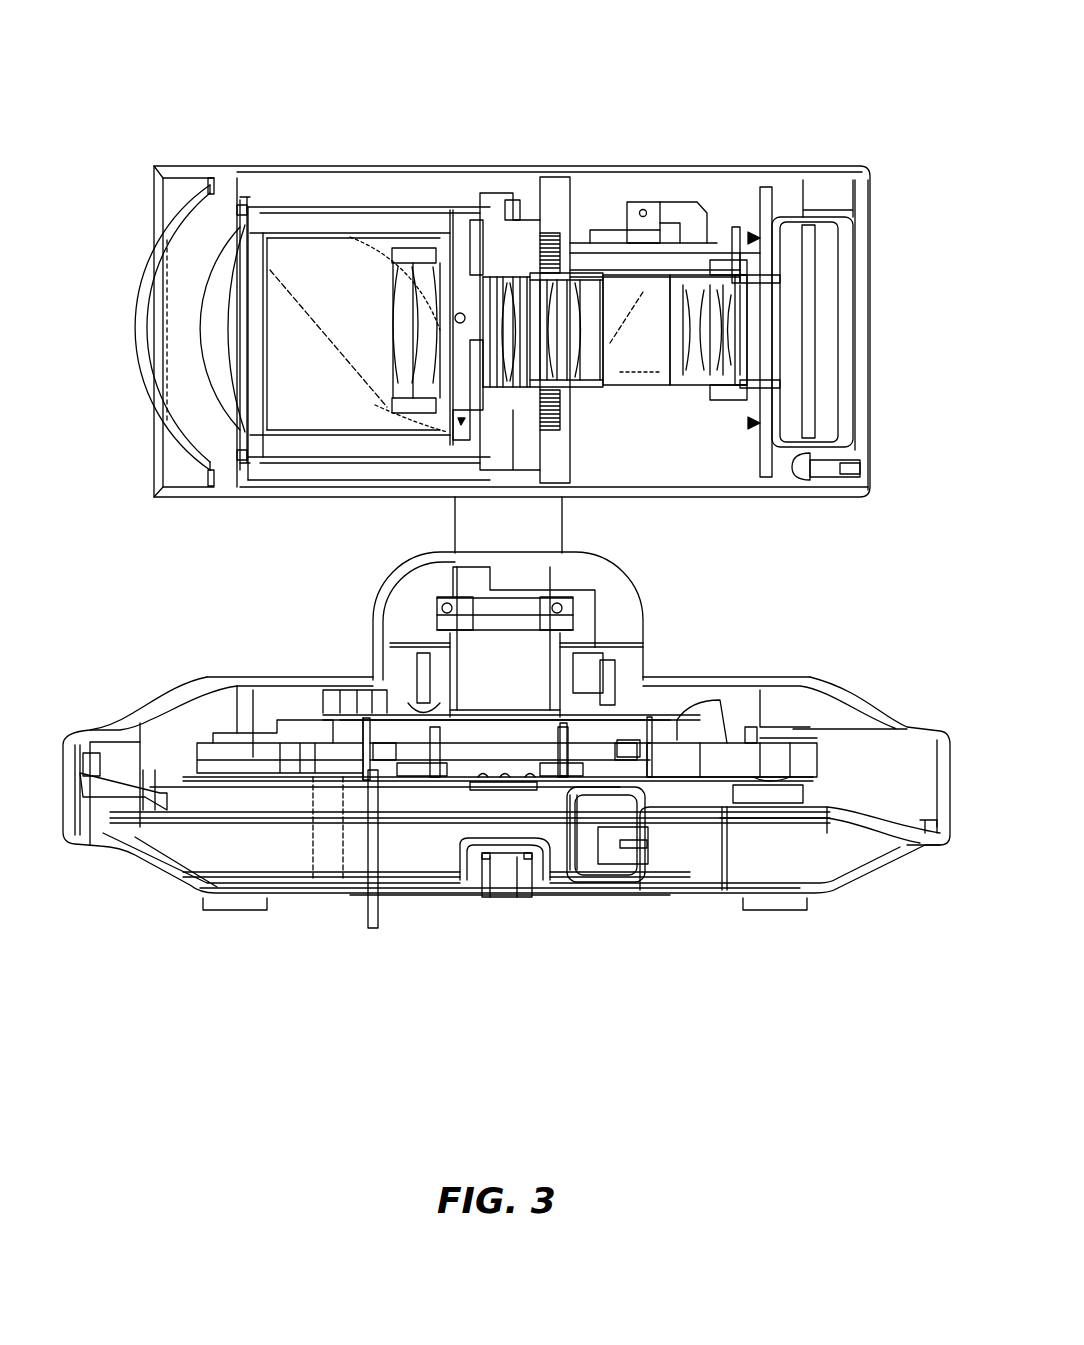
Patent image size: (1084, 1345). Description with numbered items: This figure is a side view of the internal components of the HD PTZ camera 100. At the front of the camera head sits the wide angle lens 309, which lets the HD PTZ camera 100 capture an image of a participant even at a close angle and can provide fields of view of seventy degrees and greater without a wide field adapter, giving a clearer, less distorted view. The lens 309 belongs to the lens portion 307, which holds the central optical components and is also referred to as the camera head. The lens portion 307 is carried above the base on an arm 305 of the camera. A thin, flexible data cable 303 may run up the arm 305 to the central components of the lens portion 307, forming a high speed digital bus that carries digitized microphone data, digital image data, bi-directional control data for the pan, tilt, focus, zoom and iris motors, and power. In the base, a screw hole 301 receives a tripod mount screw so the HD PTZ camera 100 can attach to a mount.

The HD PTZ camera 100 is at (668, 112).
The screw hole 301 is at (507, 892).
The data cable 303 is at (375, 907).
The arm 305 is at (528, 522).
The lens portion 307 is at (868, 155).
The wide angle lens 309 is at (190, 250).